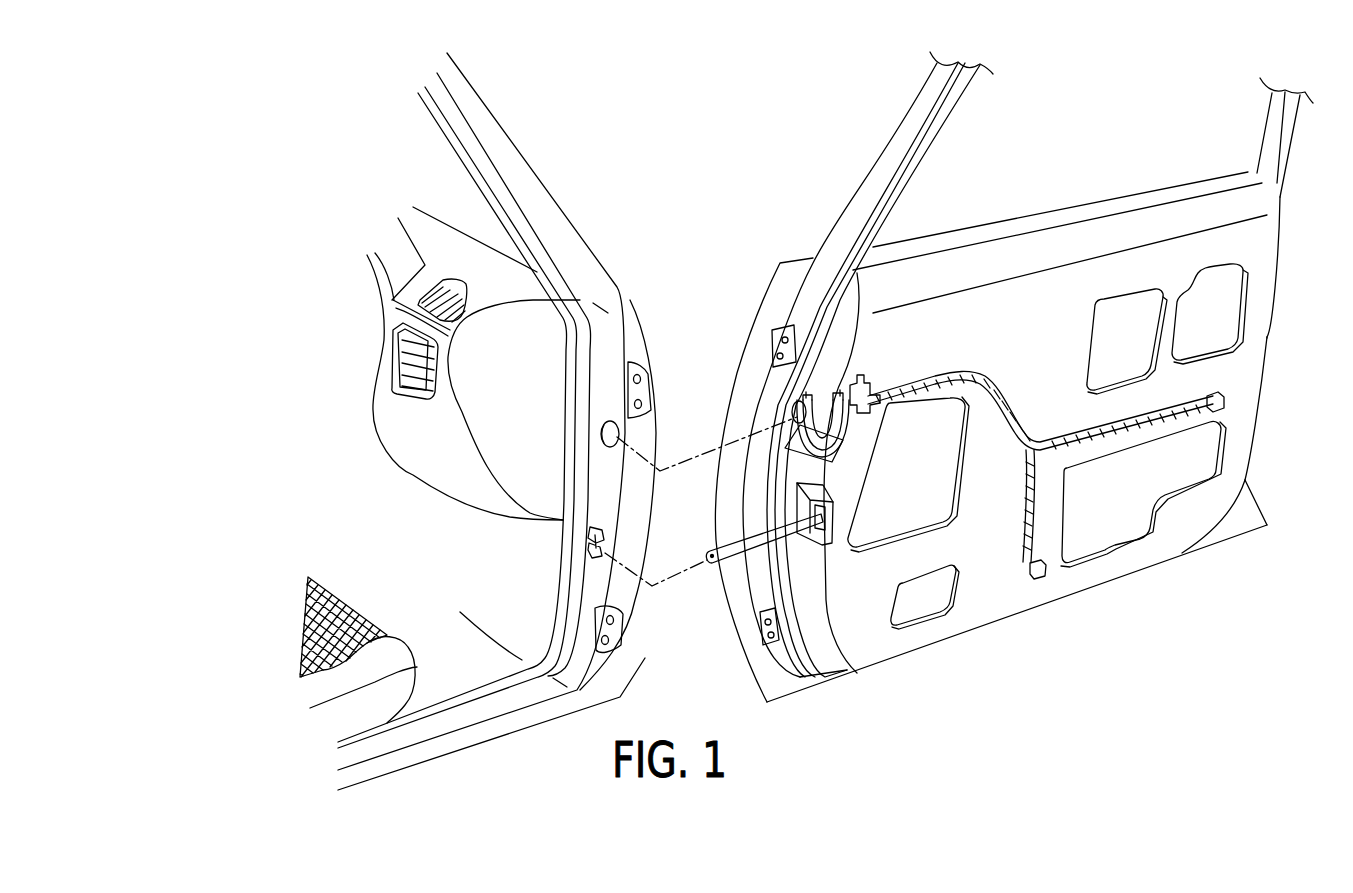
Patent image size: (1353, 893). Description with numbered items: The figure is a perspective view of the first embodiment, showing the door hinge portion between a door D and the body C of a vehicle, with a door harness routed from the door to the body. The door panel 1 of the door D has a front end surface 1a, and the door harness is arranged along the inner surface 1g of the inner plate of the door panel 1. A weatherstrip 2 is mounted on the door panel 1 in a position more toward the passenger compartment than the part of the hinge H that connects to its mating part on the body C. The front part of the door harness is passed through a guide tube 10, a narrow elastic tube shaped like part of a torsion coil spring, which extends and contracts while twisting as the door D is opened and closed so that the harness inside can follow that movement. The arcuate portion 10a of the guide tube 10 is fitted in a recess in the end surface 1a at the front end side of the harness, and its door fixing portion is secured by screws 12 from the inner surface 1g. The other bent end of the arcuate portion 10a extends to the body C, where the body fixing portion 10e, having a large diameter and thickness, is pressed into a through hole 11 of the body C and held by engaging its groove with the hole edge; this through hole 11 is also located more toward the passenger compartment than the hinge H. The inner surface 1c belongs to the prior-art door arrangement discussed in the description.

The door panel 1 is at (1276, 375).
The front end surface of door panel 1a is at (833, 648).
The inner surface of door 1c is at (797, 447).
The inner surface of inner plate 1g is at (1062, 580).
The weatherstrip 2 is at (923, 128).
The guide tube 10 is at (873, 390).
The arcuate portion 10a is at (823, 410).
The body fixing portion 10e is at (793, 407).
The through hole 11 is at (602, 434).
The screws 12 is at (857, 420).
The hinge H is at (638, 378).
The body C is at (406, 150).
The door D is at (1112, 93).